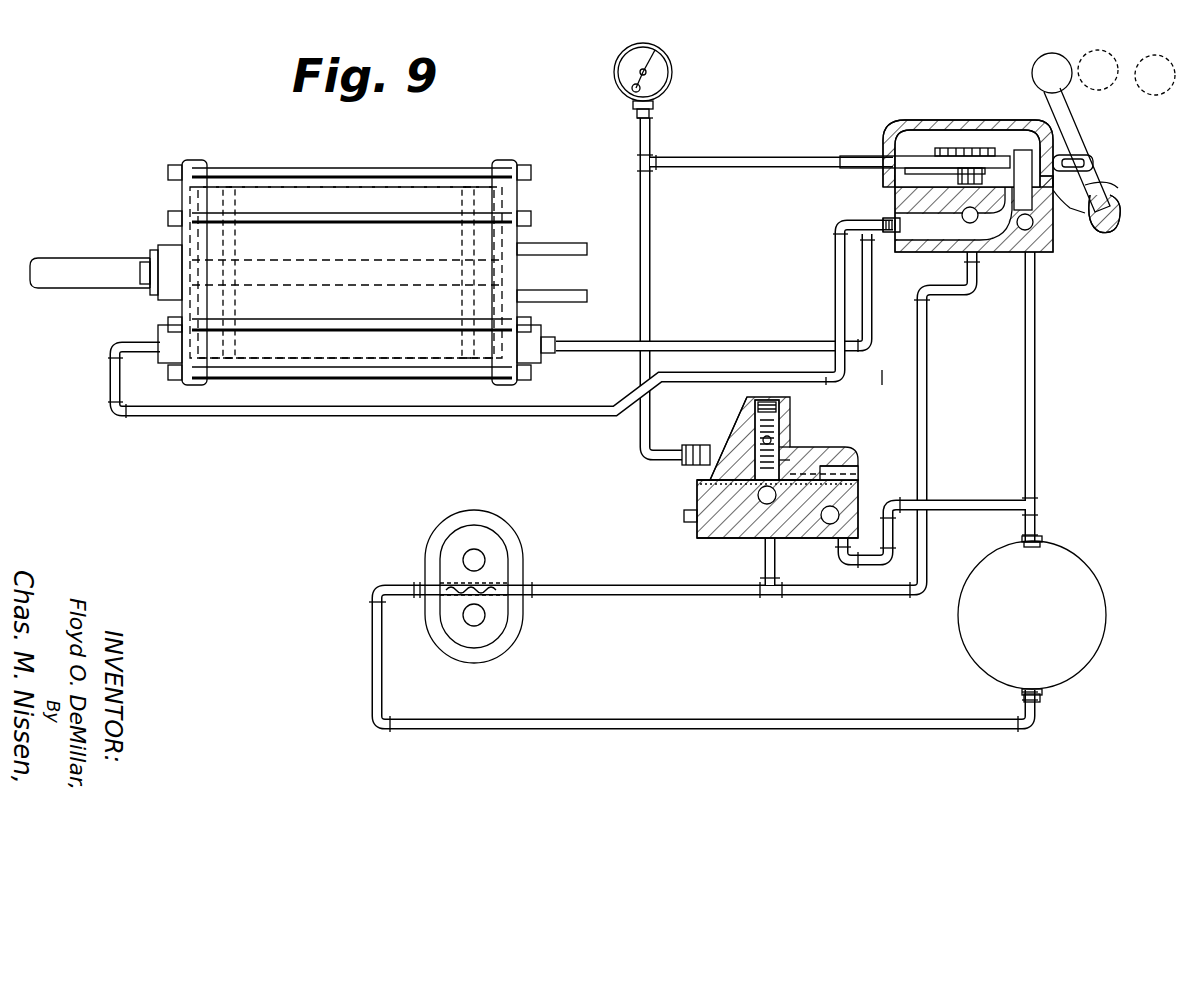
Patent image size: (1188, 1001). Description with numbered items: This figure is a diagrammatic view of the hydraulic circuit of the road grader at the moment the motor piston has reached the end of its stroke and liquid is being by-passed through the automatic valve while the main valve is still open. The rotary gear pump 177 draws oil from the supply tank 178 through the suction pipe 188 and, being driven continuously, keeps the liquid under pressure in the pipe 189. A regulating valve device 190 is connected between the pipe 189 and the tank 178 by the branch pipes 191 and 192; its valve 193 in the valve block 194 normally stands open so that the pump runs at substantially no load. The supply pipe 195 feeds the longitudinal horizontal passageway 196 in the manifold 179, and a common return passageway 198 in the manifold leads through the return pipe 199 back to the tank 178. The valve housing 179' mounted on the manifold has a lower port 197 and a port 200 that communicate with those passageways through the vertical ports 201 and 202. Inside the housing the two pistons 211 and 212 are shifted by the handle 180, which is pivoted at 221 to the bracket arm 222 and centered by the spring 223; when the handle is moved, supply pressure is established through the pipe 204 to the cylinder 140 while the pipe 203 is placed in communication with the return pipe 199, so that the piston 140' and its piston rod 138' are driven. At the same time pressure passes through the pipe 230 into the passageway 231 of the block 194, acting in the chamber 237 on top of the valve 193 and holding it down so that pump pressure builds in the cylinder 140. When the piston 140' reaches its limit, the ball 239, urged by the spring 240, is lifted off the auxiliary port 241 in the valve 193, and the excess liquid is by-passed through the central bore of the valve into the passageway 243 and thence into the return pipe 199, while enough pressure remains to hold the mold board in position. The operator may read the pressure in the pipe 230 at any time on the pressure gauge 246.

The piston rod 138' is at (90, 249).
The cylinder 140 is at (368, 248).
The piston 140' is at (348, 272).
The pressure gauge 246 is at (672, 58).
The pipe 230 is at (652, 242).
The valve housing 179' is at (968, 114).
The piston 212 is at (915, 152).
The piston 211 is at (968, 150).
The port 197 is at (975, 168).
The port 200 is at (1028, 185).
The handle 180 is at (1072, 124).
The vertical port 202 is at (1058, 195).
The spring 223 is at (1110, 188).
The pivot 221 is at (1118, 218).
The bracket arm 222 is at (1080, 214).
The vertical port 201 is at (895, 203).
The longitudinal horizontal passageway 196 is at (771, 500).
The manifold 179 is at (883, 354).
The return passageway 198 is at (852, 512).
The pipe 204 is at (588, 342).
The chamber 237 is at (763, 398).
The auxiliary port 241 is at (772, 400).
The valve 193 is at (718, 440).
The passageway 231 is at (700, 445).
The ball 239 is at (790, 445).
The regulating valve device 190 is at (806, 435).
The spring 240 is at (790, 460).
The passageway 243 is at (860, 471).
The valve block 194 is at (698, 470).
The supply pipe 195 is at (930, 378).
The return pipe 199 is at (1036, 410).
The branch pipe 192 is at (970, 503).
The pipe 203 is at (528, 415).
The pump 177 is at (532, 544).
The branch pipe 191 is at (764, 562).
The supply pipe 189 is at (700, 596).
The supply tank 178 is at (1090, 586).
The suction pipe 188 is at (750, 720).